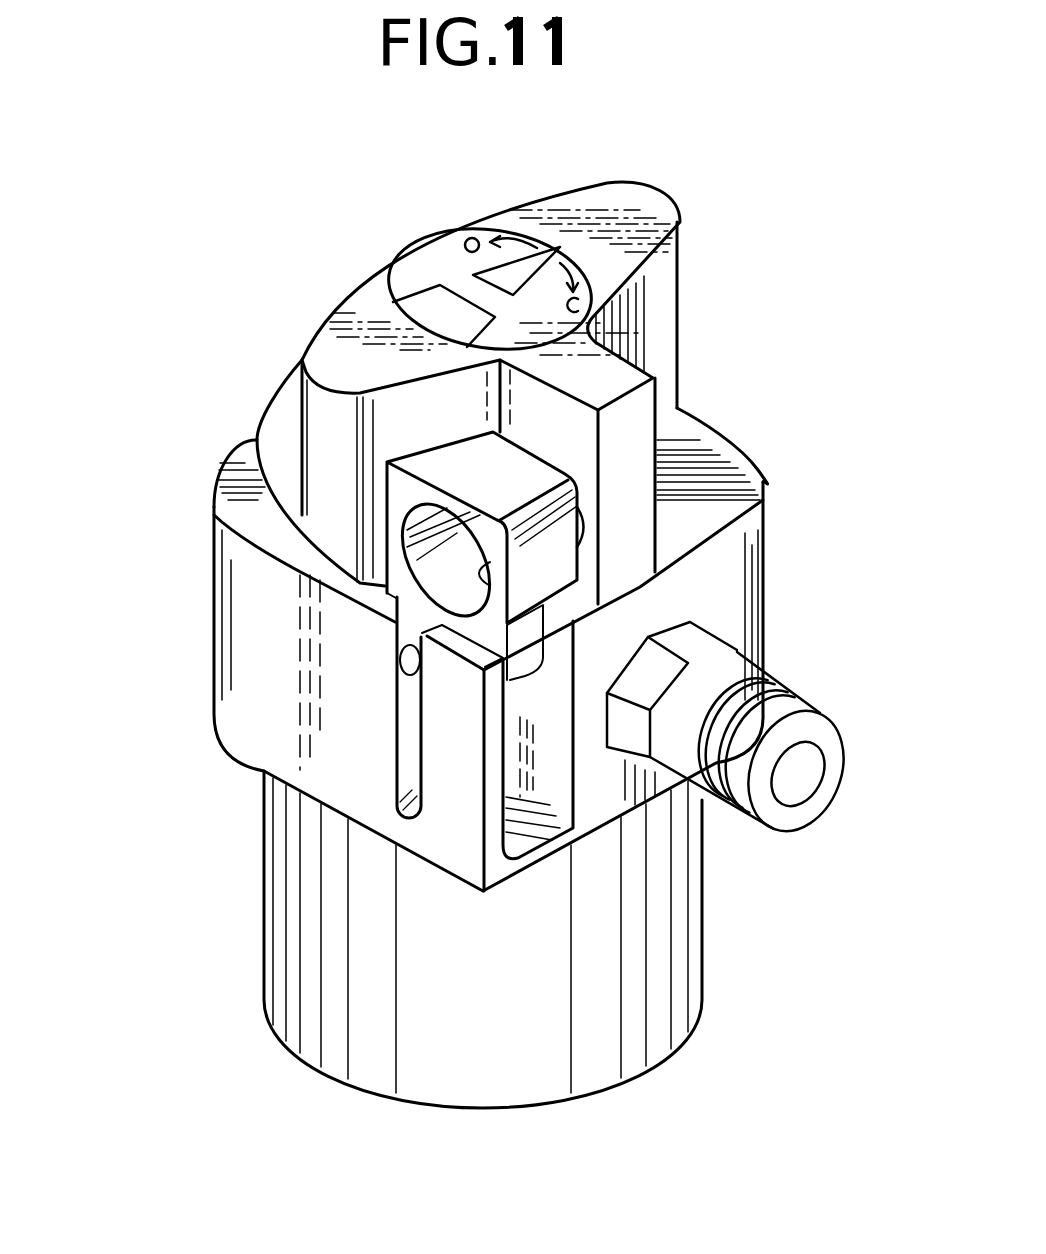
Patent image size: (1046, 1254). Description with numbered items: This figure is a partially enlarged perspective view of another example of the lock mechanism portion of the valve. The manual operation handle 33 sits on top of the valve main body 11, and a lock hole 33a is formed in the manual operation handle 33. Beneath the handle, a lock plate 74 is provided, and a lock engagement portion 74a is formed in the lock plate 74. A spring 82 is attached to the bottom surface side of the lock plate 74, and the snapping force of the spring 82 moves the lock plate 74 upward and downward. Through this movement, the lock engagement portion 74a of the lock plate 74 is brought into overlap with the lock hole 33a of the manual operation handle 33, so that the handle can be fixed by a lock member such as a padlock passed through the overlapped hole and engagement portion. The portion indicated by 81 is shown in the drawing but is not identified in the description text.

The valve main body 11 is at (682, 954).
The manual operation handle 33 is at (642, 200).
The lock hole 33a is at (585, 530).
The lock plate 74 is at (453, 470).
The lock engagement portion 74a is at (483, 588).
The valve body 81 is at (205, 622).
The spring 82 is at (414, 721).